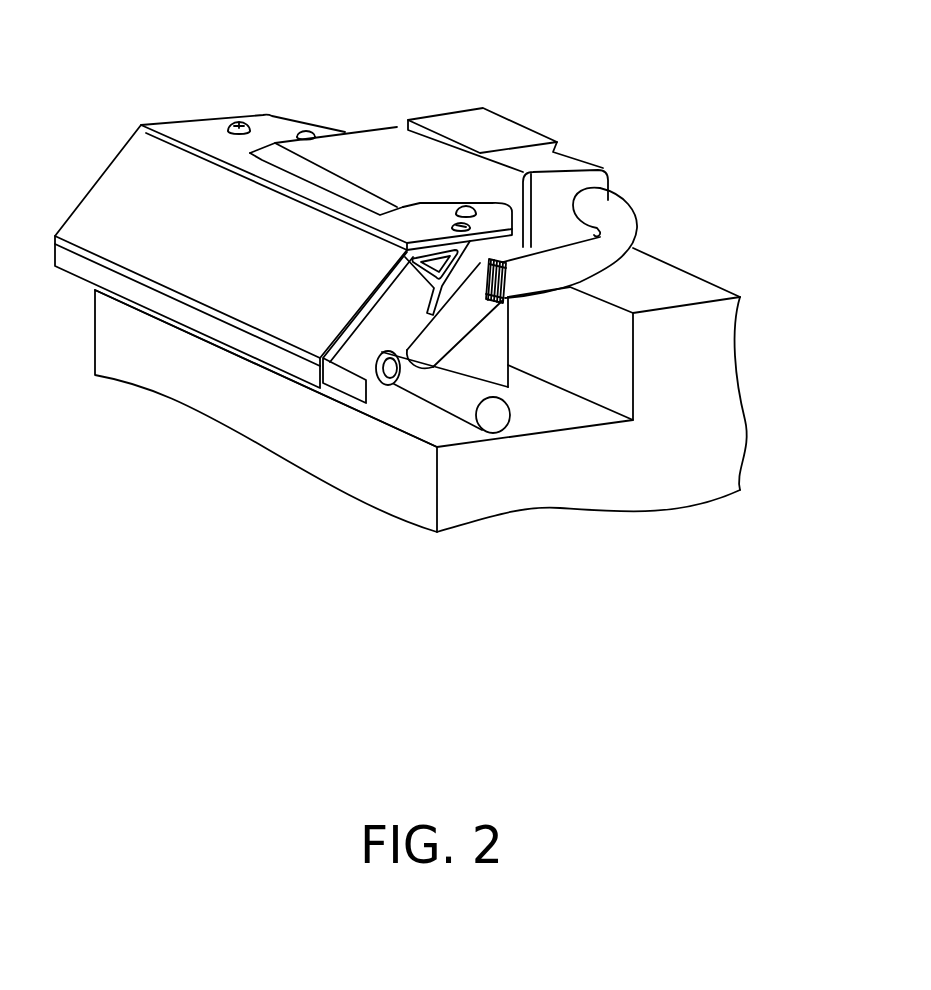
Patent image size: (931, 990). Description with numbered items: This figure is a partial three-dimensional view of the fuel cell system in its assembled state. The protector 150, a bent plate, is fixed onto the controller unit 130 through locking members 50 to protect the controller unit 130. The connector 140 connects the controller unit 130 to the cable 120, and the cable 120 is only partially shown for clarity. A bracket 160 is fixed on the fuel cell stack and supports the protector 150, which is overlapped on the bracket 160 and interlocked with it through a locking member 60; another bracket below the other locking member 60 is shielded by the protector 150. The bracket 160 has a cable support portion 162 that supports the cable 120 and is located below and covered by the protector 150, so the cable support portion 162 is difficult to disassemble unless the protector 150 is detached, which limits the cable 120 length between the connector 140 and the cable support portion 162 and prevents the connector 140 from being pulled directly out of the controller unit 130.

The protector 150 is at (120, 207).
The controller unit 130 is at (384, 157).
The connector 140 is at (490, 132).
The locking member 50 is at (303, 128).
The locking member 60 is at (242, 120).
The cable 120 is at (612, 211).
The cable support portion 162 is at (508, 295).
The bracket 160 is at (483, 350).